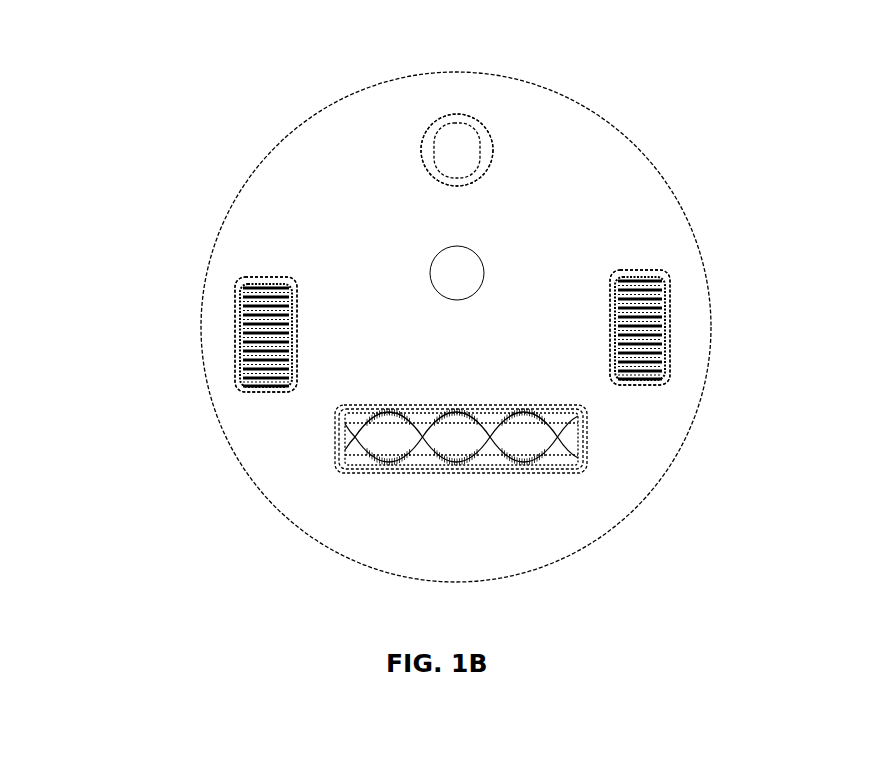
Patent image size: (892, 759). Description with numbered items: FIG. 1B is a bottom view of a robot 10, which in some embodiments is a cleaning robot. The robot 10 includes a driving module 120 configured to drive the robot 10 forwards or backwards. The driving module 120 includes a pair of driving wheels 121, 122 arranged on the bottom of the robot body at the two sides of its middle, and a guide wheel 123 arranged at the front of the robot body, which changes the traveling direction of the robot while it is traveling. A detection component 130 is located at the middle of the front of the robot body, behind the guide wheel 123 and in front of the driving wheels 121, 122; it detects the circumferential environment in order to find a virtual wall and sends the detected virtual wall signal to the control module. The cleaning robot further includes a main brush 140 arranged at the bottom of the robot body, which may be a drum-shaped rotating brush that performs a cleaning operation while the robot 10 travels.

The robot 10 is at (188, 168).
The driving module 120 is at (500, 128).
The driving wheel 121 is at (235, 358).
The driving wheel 122 is at (670, 313).
The guide wheel 123 is at (457, 115).
The detection component 130 is at (437, 292).
The main brush 140 is at (427, 450).